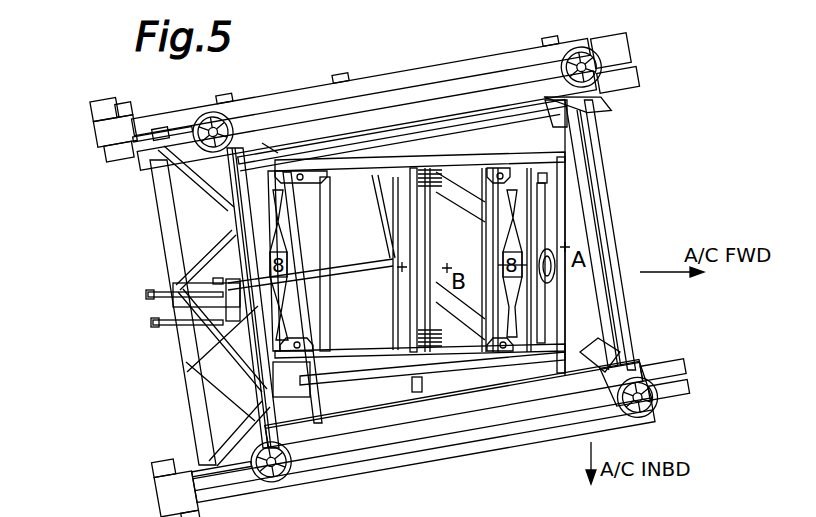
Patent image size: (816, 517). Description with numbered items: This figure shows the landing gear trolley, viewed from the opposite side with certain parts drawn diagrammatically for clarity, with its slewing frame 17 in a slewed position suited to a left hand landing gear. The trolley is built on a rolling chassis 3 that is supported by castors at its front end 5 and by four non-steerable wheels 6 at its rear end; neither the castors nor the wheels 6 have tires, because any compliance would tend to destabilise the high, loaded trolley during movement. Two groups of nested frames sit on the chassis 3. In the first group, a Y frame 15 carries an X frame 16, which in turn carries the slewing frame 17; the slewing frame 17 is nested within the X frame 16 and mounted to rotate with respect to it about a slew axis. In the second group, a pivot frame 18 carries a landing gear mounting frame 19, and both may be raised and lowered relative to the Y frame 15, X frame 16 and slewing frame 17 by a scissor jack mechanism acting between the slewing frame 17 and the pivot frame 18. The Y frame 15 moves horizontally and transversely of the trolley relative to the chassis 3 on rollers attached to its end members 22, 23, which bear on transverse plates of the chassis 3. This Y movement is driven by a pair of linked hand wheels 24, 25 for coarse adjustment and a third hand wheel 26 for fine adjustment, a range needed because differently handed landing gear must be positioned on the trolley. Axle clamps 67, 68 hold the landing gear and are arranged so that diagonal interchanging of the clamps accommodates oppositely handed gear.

The rolling chassis 3 is at (418, 78).
The front end 5 is at (93, 128).
The non-steerable wheels 6 is at (688, 376).
The Y frame 15 is at (583, 199).
The X frame 16 is at (593, 140).
The slewing frame 17 is at (538, 324).
The pivot frame 18 is at (566, 303).
The landing gear mounting frame 19 is at (272, 358).
The end member 22 is at (247, 212).
The end member 23 is at (600, 245).
The hand wheel 24 is at (230, 96).
The hand wheel 25 is at (552, 40).
The third hand wheel 26 is at (340, 78).
The axle clamp 67 is at (292, 342).
The axle clamp 68 is at (506, 349).